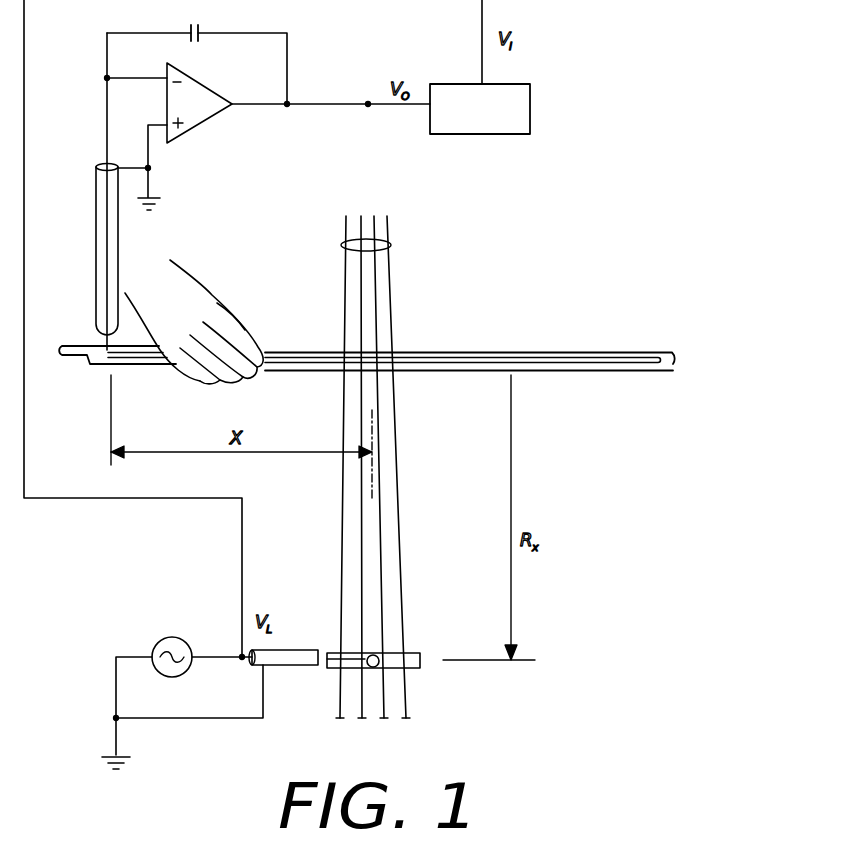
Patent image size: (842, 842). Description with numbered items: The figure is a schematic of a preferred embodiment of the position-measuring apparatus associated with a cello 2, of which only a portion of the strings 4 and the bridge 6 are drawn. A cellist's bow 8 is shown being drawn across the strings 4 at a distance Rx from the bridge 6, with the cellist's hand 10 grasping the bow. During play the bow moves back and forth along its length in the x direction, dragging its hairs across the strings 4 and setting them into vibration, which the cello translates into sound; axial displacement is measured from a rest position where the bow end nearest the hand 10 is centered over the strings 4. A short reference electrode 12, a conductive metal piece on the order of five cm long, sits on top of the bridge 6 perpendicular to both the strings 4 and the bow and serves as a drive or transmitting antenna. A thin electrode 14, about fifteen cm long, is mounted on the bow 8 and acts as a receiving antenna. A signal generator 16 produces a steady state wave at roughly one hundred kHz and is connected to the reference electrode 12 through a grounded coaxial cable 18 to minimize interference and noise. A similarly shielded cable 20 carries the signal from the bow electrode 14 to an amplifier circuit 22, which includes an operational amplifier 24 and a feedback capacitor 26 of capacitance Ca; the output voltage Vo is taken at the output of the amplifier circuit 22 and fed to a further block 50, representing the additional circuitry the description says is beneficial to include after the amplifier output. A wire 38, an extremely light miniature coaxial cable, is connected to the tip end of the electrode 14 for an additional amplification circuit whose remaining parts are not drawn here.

The cello 2 is at (544, 57).
The strings 4 is at (391, 245).
The bridge 6 is at (415, 668).
The bow 8 is at (666, 362).
The hand 10 is at (187, 272).
The reference electrode 12 is at (383, 653).
The electrode 14 is at (584, 372).
The signal generator 16 is at (157, 634).
The coaxial cable 18 is at (282, 650).
The shielded cable 20 is at (96, 205).
The amplifier circuit 22 is at (308, 35).
The amplifier 24 is at (203, 124).
The capacitor 26 is at (200, 32).
The wire 38 is at (666, 378).
The processing unit 50 is at (490, 121).